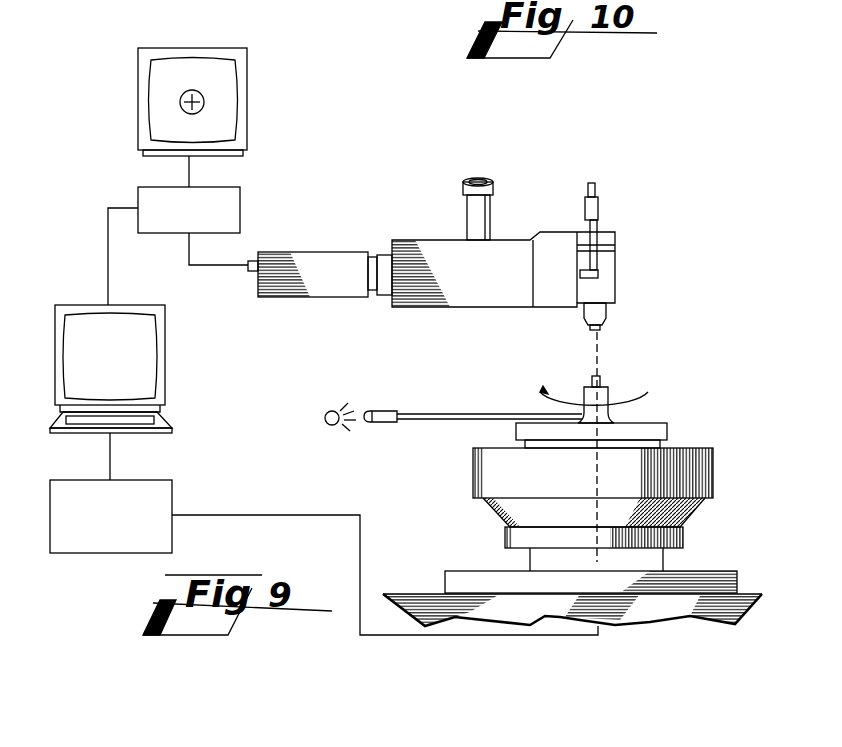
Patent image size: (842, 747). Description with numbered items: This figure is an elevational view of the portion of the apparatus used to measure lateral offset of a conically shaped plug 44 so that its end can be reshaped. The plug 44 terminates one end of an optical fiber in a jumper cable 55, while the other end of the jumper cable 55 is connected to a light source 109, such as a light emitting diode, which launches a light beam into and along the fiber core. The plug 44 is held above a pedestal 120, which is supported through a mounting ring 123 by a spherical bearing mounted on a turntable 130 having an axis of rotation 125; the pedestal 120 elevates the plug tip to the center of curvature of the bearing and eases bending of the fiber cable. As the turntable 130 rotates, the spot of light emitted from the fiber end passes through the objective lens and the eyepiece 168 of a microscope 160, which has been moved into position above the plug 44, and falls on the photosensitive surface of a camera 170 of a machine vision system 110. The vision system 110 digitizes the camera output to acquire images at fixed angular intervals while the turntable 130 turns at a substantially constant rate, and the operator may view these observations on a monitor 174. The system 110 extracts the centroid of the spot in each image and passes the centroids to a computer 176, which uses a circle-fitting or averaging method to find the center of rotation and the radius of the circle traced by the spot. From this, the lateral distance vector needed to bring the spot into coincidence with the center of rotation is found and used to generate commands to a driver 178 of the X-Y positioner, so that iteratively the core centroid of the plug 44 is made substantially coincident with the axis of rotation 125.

The monitor 174 is at (247, 50).
The machine vision system 110 is at (296, 154).
The camera 170 is at (320, 260).
The microscope 160 is at (608, 278).
The eyepiece 168 is at (596, 329).
The plug 44 is at (382, 410).
The pedestal 120 is at (608, 396).
The mounting ring 123 is at (667, 428).
The axis of rotation 125 is at (597, 490).
The turntable 130 is at (713, 484).
The light source 109 is at (332, 410).
The jumper cable 55 is at (427, 420).
The computer 176 is at (165, 373).
The driver 178 is at (135, 480).